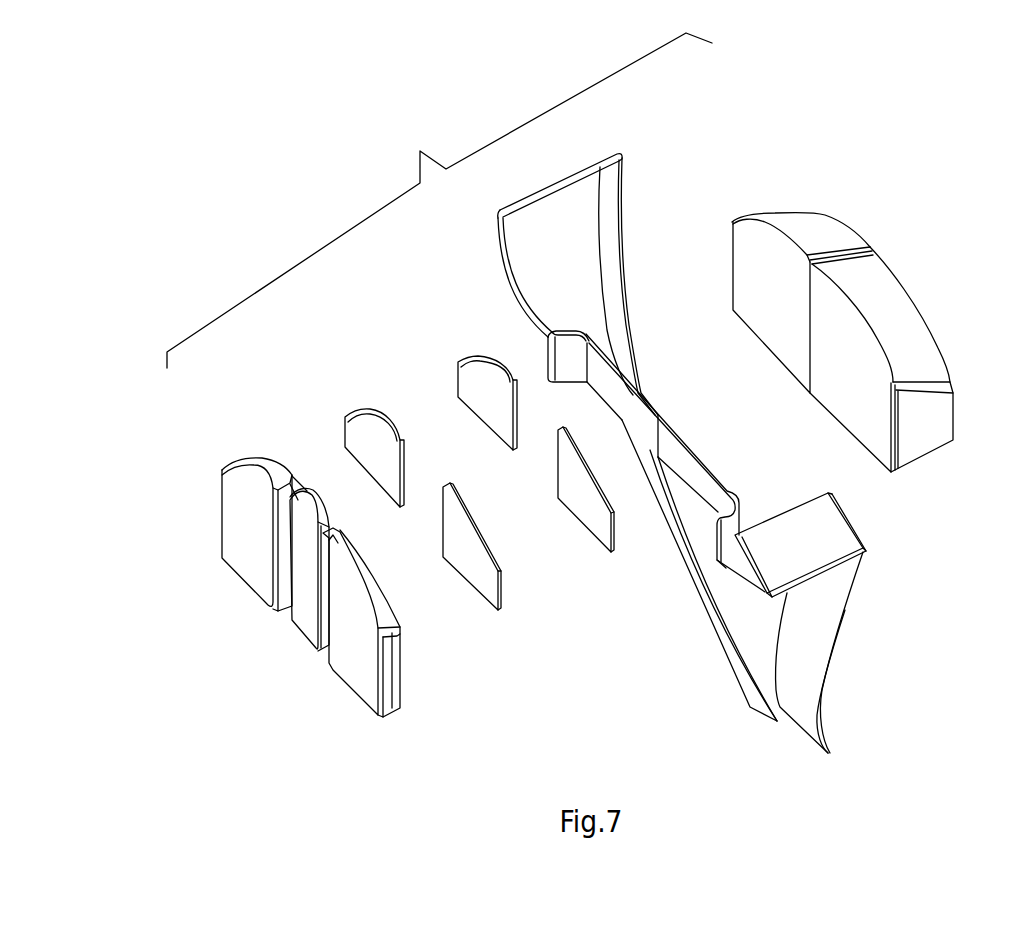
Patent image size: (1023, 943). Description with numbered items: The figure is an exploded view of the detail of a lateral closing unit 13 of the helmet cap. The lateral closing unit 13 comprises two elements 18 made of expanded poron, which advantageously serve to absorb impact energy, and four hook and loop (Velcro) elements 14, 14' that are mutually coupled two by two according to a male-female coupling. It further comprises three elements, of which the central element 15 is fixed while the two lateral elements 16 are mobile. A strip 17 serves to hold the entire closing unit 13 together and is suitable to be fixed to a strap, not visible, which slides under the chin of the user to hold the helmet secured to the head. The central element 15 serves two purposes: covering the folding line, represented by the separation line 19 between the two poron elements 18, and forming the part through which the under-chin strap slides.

The lateral closing unit 13 is at (439, 200).
The hook and loop element 14 is at (524, 443).
The hook and loop element 14' is at (447, 478).
The central element 15 is at (297, 515).
The lateral element 16 is at (245, 490).
The strip 17 is at (605, 218).
The expanded poron element 18 is at (808, 227).
The separation line 19 is at (832, 248).